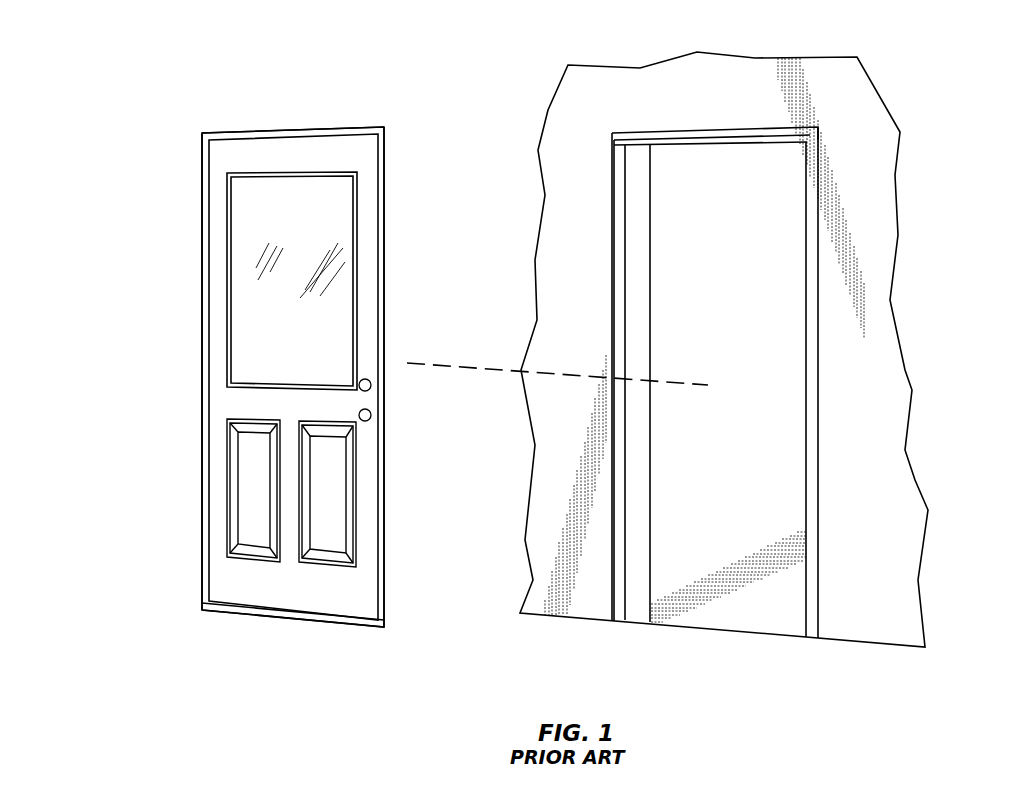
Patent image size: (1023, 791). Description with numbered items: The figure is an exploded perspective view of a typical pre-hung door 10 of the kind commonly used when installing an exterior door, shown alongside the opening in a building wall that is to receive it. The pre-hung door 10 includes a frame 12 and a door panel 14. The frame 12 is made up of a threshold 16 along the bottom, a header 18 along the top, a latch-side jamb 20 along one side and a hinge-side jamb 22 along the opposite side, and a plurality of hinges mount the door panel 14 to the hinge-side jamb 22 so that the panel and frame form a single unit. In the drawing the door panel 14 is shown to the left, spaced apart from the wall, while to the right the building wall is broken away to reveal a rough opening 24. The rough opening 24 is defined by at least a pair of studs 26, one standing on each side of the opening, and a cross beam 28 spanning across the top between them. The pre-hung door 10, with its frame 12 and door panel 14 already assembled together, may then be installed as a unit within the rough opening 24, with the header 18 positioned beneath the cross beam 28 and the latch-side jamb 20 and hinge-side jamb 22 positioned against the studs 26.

The pre-hung door 10 is at (128, 78).
The frame 12 is at (200, 178).
The door panel 14 is at (250, 484).
The threshold 16 is at (258, 620).
The header 18 is at (265, 130).
The latch-side jamb 20 is at (384, 265).
The hinge-side jamb 22 is at (205, 332).
The rough opening 24 is at (780, 292).
The studs 26 is at (617, 253).
The cross beam 28 is at (788, 128).